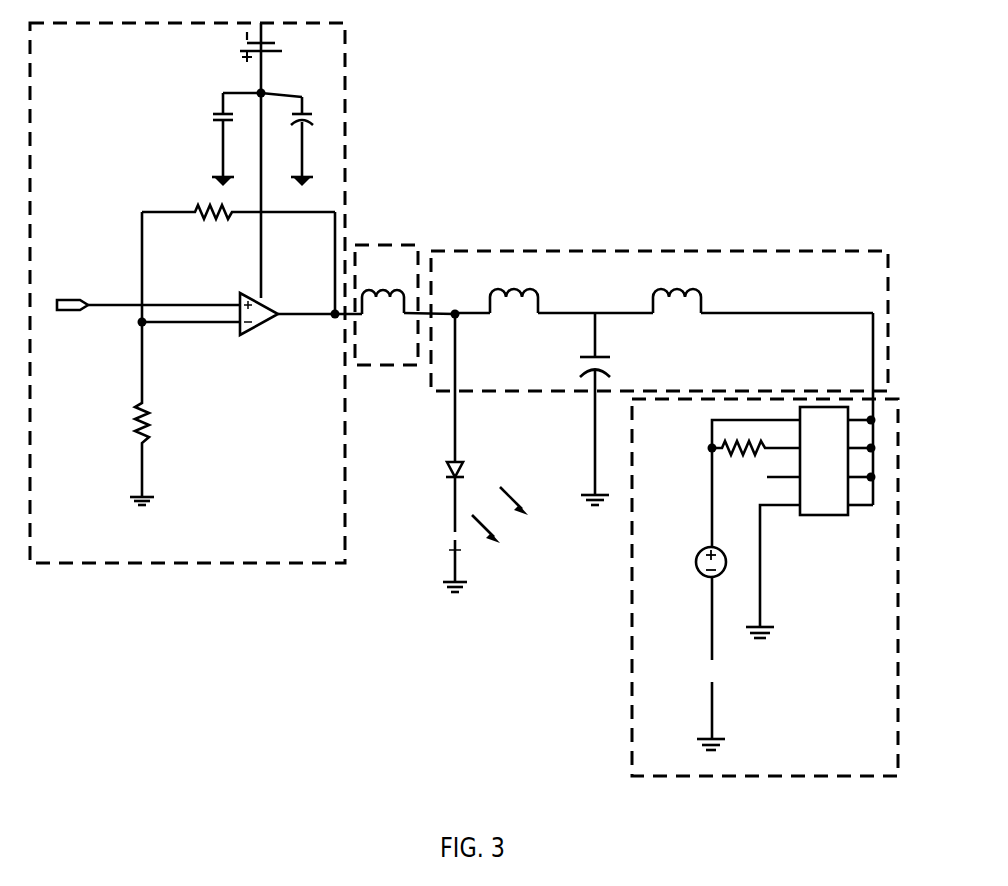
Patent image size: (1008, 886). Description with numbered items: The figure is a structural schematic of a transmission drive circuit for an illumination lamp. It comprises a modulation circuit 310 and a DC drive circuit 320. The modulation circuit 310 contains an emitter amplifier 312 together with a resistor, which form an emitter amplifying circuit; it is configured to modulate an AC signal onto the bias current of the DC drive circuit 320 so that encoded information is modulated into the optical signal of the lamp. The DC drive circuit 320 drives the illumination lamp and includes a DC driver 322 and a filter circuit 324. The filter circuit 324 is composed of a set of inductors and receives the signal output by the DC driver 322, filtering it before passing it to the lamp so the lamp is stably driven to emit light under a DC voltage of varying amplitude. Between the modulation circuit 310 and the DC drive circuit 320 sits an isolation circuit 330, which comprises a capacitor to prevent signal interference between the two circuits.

The modulation circuit 310 is at (196, 322).
The emitter amplifier 312 is at (301, 333).
The DC drive circuit 320 is at (765, 604).
The DC driver 322 is at (800, 517).
The filter circuit 324 is at (659, 364).
The isolation circuit 330 is at (405, 337).